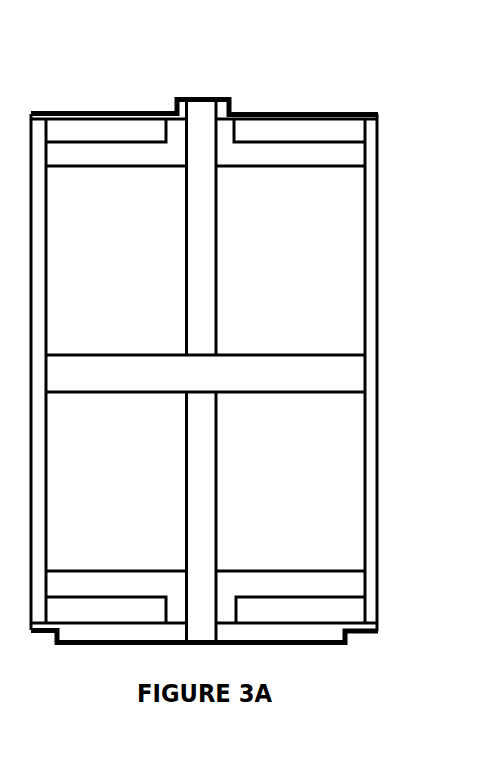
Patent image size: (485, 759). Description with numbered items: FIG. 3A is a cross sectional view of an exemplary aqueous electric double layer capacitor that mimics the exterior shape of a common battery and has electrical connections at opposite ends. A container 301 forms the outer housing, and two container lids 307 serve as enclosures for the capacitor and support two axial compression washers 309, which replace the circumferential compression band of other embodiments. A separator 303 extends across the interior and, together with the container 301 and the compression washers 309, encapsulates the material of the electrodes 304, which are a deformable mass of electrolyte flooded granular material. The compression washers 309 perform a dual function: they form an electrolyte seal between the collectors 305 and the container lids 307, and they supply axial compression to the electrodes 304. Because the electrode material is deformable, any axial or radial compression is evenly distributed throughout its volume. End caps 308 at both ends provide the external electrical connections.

The container 301 is at (380, 333).
The separator 303 is at (285, 374).
The electrodes 304 is at (283, 293).
The collectors 305 is at (205, 230).
The container lids 307 is at (343, 133).
The end caps 308 is at (310, 111).
The compression washers 309 is at (272, 150).